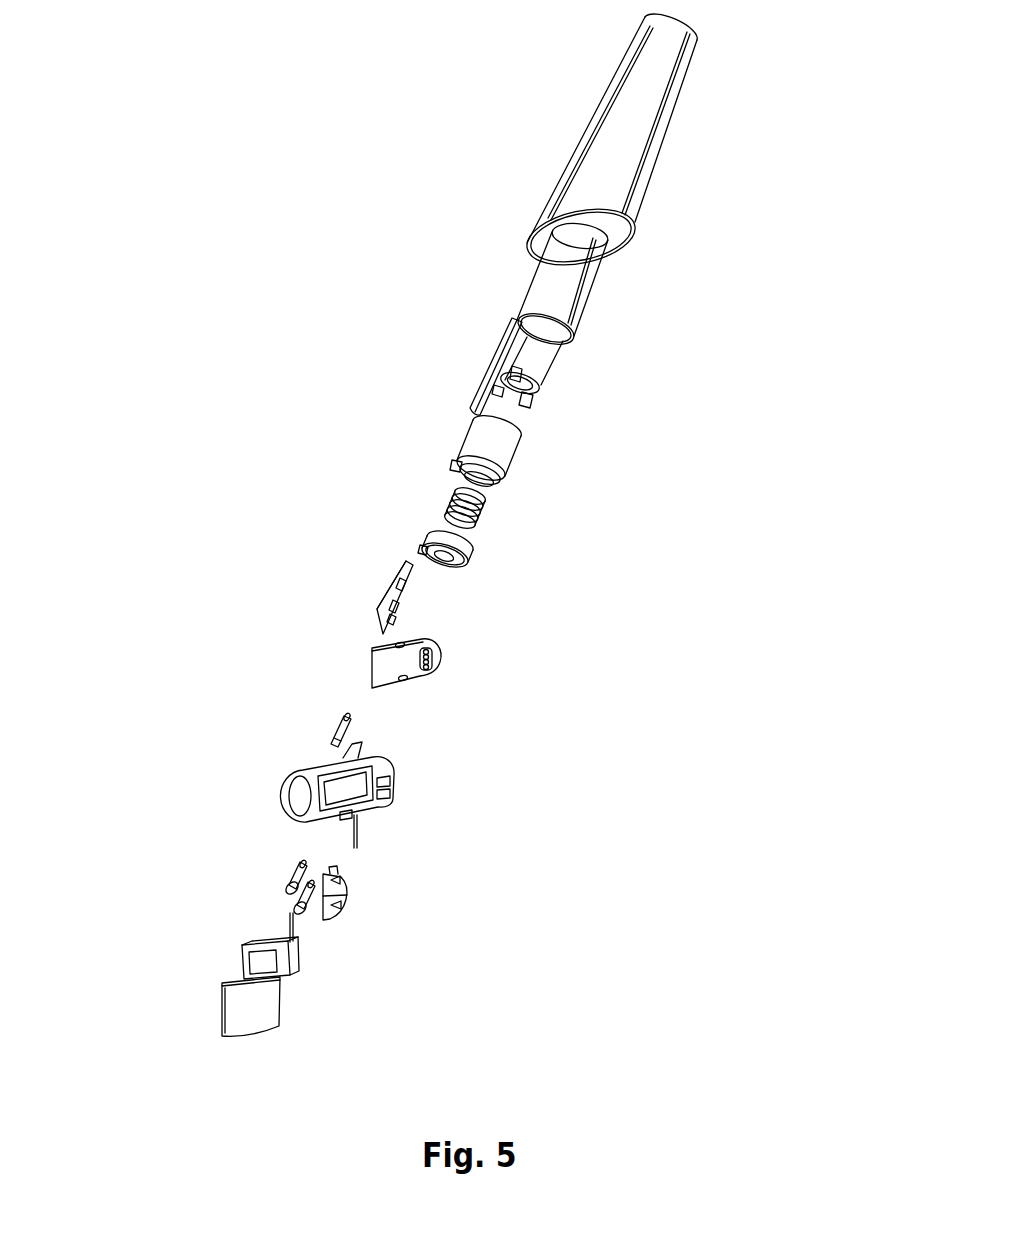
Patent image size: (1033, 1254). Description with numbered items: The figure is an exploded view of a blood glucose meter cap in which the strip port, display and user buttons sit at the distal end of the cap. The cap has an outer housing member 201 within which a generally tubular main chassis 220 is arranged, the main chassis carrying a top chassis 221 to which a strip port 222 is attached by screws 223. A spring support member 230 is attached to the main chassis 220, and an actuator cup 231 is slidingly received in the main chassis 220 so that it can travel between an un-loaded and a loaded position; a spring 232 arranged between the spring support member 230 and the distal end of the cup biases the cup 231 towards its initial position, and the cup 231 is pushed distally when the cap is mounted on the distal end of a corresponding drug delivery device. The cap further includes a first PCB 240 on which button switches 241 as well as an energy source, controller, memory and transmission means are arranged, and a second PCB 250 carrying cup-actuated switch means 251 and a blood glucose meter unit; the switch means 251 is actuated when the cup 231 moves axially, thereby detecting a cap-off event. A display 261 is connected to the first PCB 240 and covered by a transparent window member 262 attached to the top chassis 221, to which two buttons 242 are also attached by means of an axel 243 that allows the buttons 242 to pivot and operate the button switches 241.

The housing member 201 is at (615, 160).
The main chassis 220 is at (555, 284).
The top chassis 221 is at (330, 768).
The strip port 222 is at (295, 800).
The screws 223 is at (291, 885).
The spring support member 230 is at (425, 537).
The actuator cup 231 is at (483, 443).
The spring 232 is at (455, 493).
The first PCB 240 is at (385, 668).
The button switches 241 is at (430, 670).
The buttons 242 is at (330, 893).
The axel 243 is at (357, 848).
The second PCB 250 is at (400, 598).
The switch means 251 is at (395, 610).
The display 261 is at (263, 960).
The window member 262 is at (250, 1005).